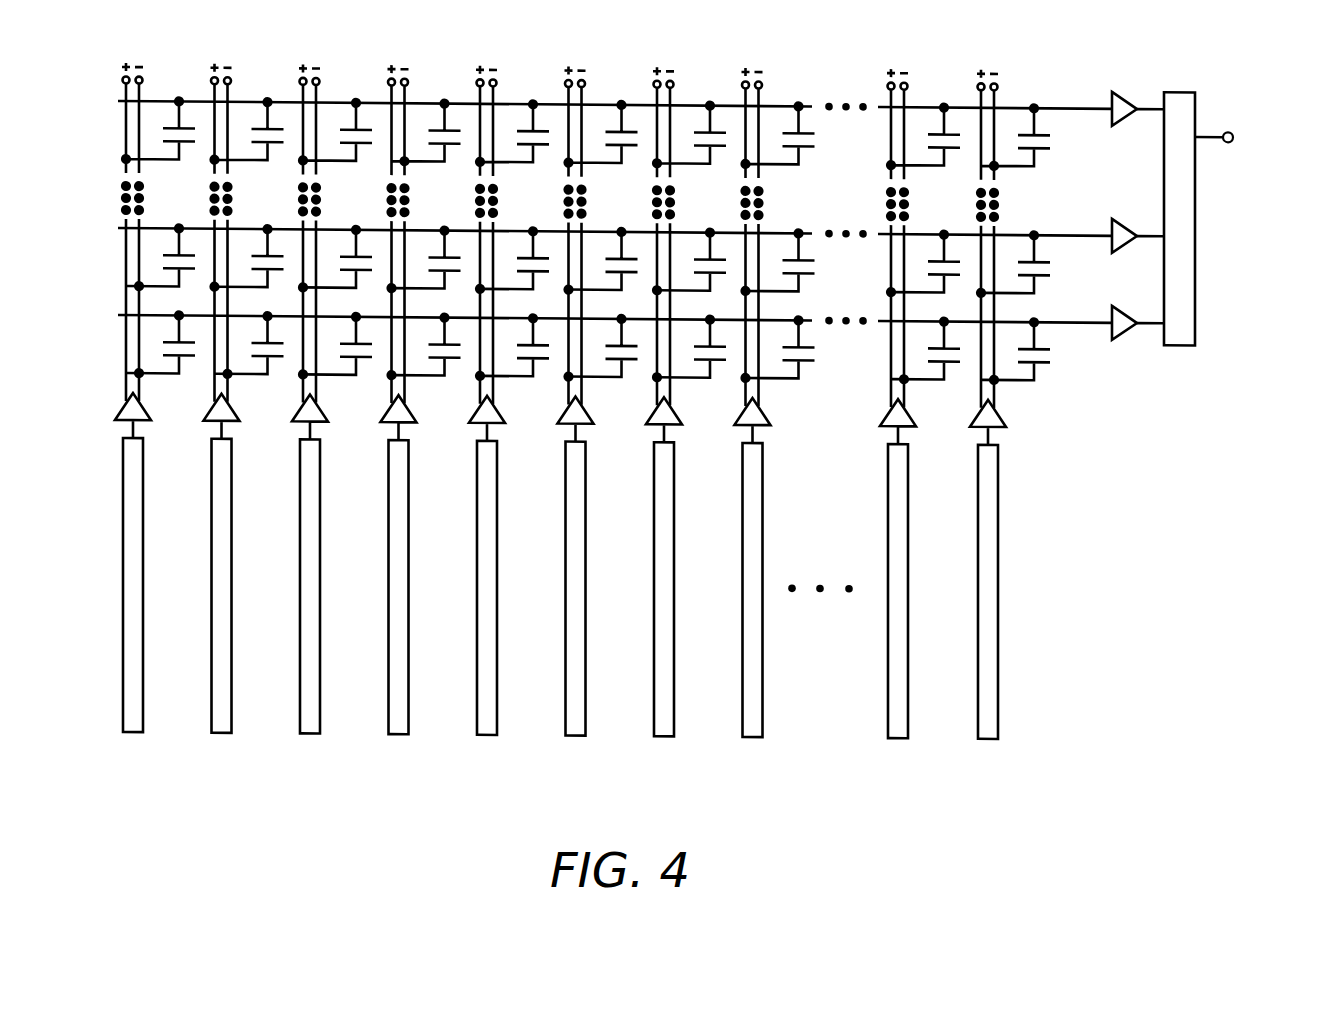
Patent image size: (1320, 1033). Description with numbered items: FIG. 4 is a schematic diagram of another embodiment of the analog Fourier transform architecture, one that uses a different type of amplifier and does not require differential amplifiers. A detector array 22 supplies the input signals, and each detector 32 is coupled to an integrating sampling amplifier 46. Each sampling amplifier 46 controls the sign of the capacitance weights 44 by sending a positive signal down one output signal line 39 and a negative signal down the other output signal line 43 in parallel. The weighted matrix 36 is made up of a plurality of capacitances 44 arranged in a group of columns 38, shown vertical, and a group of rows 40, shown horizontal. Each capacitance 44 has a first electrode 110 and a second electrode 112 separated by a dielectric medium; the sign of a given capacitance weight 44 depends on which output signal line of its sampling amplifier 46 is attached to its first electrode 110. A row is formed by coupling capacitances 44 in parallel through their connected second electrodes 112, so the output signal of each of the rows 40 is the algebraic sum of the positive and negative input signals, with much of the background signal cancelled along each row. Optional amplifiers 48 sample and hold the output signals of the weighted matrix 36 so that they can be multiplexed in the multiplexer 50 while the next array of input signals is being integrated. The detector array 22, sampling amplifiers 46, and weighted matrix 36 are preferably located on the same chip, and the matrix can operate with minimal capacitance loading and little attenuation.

The detector array 22 is at (195, 764).
The detector 32 is at (303, 731).
The weighted matrix 36 is at (205, 69).
The columns 38 is at (105, 156).
The output signal line 39 is at (127, 242).
The rows 40 is at (292, 50).
The output signal line 43 is at (138, 297).
The capacitance 44 is at (802, 138).
The integrating sampling amplifier 46 is at (118, 417).
The amplifier 48 is at (1123, 88).
The multiplexer 50 is at (1195, 317).
The first electrode 110 is at (142, 374).
The second electrode 112 is at (180, 316).